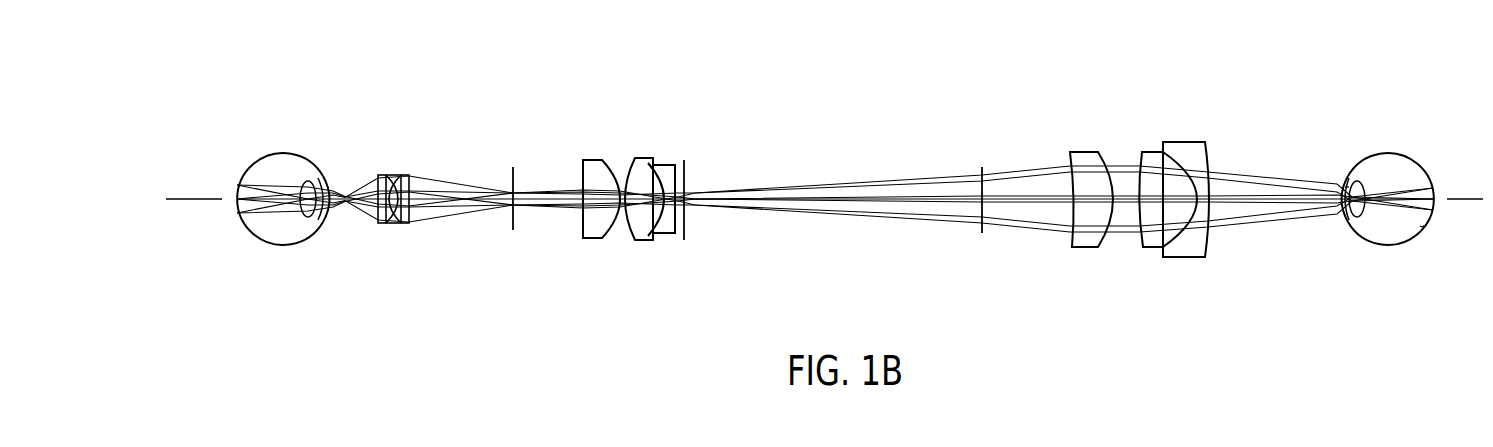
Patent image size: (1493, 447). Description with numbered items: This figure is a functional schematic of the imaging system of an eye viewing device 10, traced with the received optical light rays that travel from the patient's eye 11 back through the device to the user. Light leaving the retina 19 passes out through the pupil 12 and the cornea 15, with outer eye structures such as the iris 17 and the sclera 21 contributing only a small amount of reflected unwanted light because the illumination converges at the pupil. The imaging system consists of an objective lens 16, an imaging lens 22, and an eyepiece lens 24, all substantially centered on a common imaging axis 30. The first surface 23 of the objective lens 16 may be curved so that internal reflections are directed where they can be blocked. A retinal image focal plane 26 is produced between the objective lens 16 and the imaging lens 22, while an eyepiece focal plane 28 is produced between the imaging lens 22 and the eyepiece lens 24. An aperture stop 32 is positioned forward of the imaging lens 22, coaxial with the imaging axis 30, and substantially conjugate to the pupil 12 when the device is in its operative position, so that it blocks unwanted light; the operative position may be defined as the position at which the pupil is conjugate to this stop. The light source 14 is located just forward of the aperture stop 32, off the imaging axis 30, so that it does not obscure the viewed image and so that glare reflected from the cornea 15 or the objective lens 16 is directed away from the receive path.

The device 10 is at (1369, 165).
The eye 11 is at (1399, 148).
The pupil 12 is at (1362, 212).
The light source 14 is at (705, 187).
The cornea 15 is at (1334, 207).
The objective lens 16 is at (1135, 137).
The iris 17 is at (1346, 222).
The retina 19 is at (1424, 228).
The sclera 21 is at (1351, 173).
The imaging lens 22 is at (638, 251).
The first surface 23 is at (1068, 241).
The eyepiece lens 24 is at (424, 170).
The retinal image focal plane 26 is at (985, 170).
The eyepiece focal plane 28 is at (514, 180).
The imaging axis 30 is at (200, 197).
The aperture stop 32 is at (685, 160).